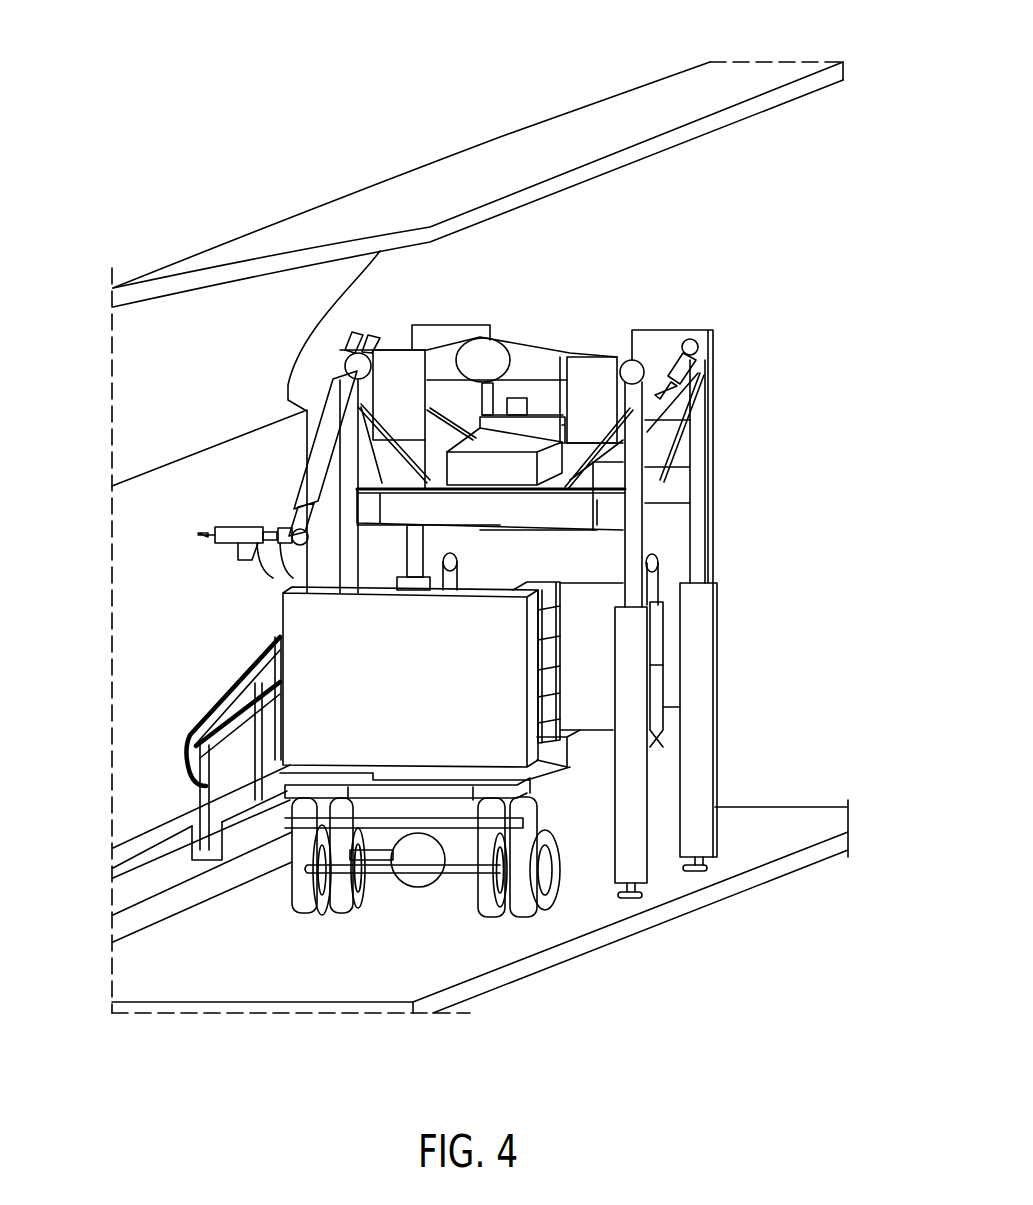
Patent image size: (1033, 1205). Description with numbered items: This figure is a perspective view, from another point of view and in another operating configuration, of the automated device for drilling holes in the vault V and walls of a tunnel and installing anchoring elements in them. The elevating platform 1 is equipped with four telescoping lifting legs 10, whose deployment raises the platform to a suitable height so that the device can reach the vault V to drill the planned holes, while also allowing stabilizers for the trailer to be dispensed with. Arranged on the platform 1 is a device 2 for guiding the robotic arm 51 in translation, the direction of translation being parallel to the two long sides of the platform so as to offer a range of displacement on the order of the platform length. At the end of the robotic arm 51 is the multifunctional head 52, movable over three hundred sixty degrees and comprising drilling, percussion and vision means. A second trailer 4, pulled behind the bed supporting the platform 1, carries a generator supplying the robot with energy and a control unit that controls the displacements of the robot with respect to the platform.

The vault V is at (290, 258).
The elevating platform 1 is at (441, 595).
The device for guiding in translation 2 is at (510, 443).
The second trailer 4 is at (555, 912).
The telescoping lifting legs 10 is at (693, 767).
The robotic arm 51 is at (323, 470).
The multifunctional head 52 is at (200, 537).